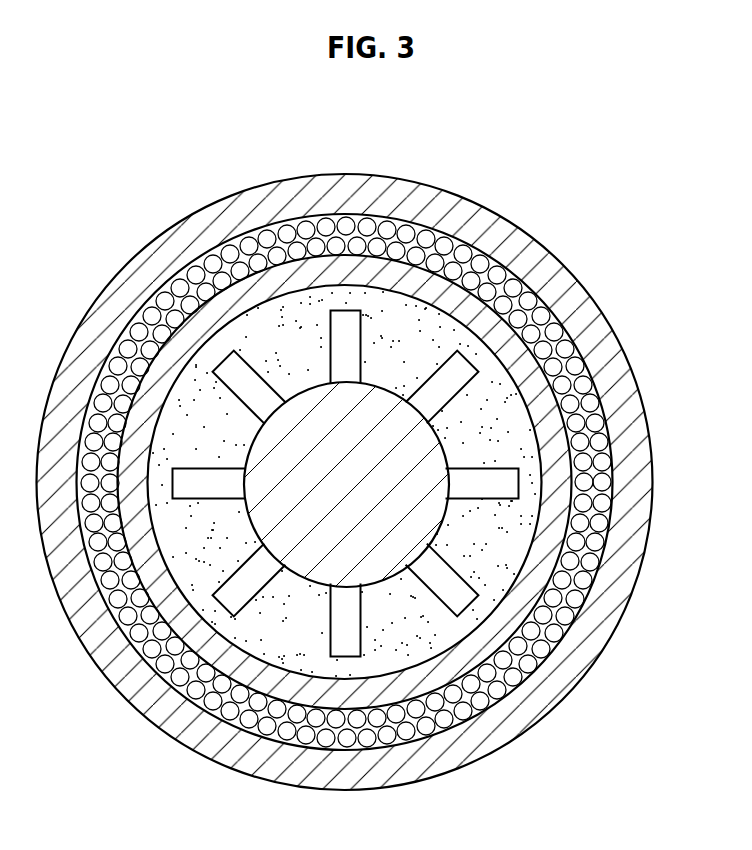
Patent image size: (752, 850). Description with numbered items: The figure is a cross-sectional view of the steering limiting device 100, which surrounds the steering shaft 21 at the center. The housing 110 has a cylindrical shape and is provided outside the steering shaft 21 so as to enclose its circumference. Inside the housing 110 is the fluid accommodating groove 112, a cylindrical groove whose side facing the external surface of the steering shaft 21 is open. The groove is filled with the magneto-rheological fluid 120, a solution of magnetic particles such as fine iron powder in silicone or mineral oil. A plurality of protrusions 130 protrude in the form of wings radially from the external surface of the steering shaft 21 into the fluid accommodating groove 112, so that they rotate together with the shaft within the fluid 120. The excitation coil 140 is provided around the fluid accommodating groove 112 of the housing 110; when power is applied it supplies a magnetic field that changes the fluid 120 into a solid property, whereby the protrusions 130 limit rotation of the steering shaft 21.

The steering limiting device 100 is at (445, 178).
The housing 110 is at (163, 245).
The fluid accommodating groove 112 is at (273, 317).
The magneto-rheological (MR) fluid 120 is at (490, 565).
The protrusions 130 is at (447, 373).
The excitation coil 140 is at (140, 330).
The steering shaft 21 is at (433, 430).